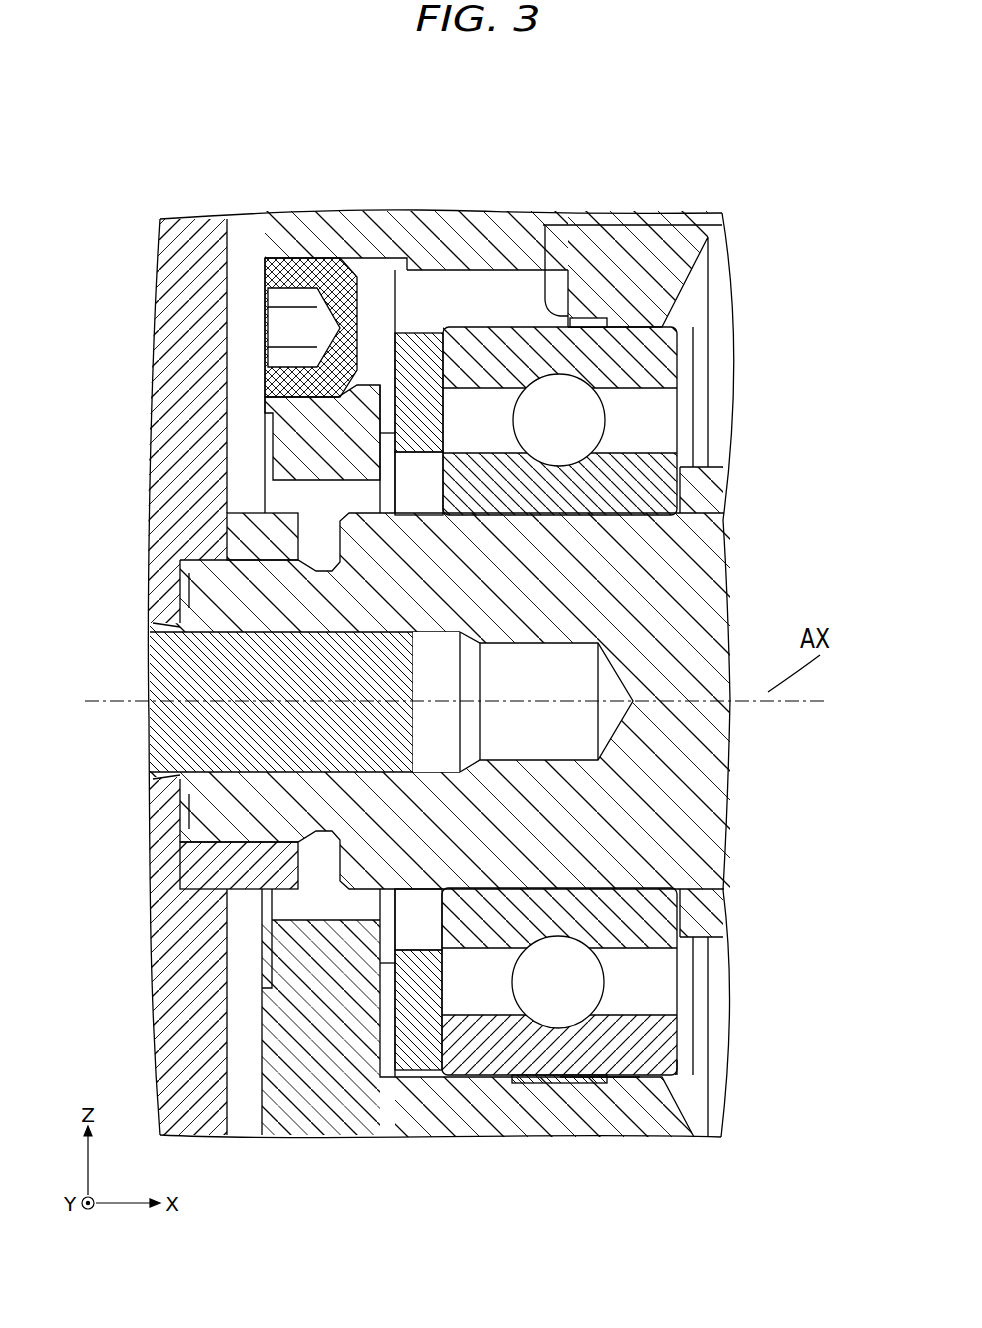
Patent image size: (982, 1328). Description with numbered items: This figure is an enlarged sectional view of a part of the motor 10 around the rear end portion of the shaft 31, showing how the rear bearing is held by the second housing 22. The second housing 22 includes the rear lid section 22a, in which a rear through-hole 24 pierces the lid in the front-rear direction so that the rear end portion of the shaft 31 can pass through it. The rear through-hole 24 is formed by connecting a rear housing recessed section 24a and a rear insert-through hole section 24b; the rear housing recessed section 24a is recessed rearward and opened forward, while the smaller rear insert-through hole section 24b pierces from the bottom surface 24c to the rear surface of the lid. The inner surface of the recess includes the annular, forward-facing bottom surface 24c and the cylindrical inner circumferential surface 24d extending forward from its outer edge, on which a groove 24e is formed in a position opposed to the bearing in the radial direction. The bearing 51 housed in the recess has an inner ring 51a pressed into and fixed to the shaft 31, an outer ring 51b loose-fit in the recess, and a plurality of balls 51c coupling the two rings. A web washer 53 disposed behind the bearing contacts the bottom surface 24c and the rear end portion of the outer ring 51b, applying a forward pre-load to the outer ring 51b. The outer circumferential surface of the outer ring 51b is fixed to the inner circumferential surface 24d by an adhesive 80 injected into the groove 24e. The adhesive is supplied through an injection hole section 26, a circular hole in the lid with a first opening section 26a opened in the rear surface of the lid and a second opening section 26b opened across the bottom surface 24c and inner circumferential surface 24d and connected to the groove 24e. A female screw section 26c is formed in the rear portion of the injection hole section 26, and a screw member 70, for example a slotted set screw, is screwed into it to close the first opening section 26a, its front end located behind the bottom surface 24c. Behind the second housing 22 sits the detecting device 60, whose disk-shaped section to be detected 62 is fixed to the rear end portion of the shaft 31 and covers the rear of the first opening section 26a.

The motor 10 is at (773, 143).
The second housing 22 is at (612, 226).
The rear lid section 22a is at (547, 310).
The rear through-hole 24 is at (434, 1050).
The rear housing recessed section 24a is at (407, 1072).
The rear insert-through hole section 24b is at (328, 900).
The bottom surface 24c is at (452, 985).
The inner circumferential surface 24d is at (643, 1062).
The groove 24e is at (595, 1090).
The injection hole section 26 is at (455, 284).
The first opening section 26a is at (263, 262).
The second opening section 26b is at (585, 297).
The female screw section 26c is at (378, 270).
The shaft 31 is at (676, 797).
The bearing 51 is at (633, 659).
The inner ring 51a is at (658, 487).
The outer ring 51b is at (655, 357).
The balls 51c is at (582, 408).
The web washer 53 is at (423, 345).
The detecting device 60 is at (130, 213).
The section to be detected 62 is at (192, 250).
The screw member 70 is at (330, 290).
The adhesive 80 is at (540, 1087).